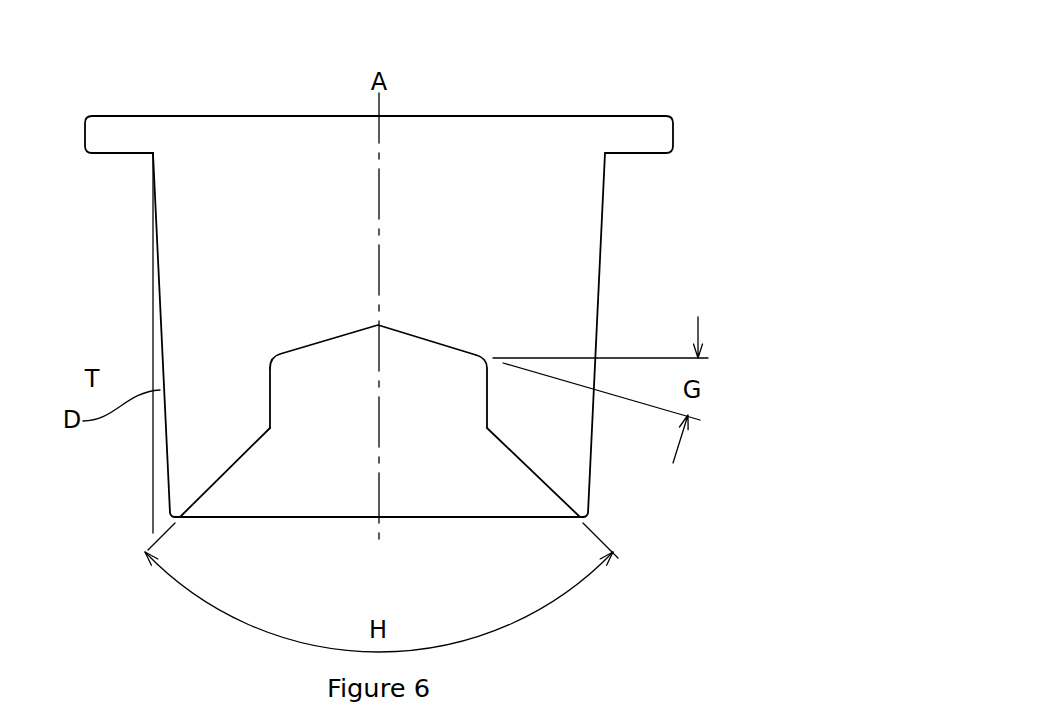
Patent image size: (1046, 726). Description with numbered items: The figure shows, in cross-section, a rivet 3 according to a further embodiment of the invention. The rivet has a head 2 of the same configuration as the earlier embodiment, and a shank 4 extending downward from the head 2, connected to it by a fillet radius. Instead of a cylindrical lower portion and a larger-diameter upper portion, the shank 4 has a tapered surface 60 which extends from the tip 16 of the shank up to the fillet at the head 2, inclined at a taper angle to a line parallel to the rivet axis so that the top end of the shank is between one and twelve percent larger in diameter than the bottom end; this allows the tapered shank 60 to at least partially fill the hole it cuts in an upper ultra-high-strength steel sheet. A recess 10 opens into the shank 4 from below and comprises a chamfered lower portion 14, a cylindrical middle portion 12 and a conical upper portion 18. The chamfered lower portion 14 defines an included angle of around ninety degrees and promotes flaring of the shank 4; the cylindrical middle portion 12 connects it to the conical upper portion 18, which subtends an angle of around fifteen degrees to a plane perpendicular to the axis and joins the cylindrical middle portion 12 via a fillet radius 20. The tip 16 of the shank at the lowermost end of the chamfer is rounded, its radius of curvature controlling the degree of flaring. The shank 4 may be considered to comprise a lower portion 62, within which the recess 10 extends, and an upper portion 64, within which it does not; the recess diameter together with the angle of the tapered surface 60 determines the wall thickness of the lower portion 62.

The head 2 is at (637, 137).
The rivet 3 is at (318, 217).
The shank 4 is at (257, 272).
The recess 10 is at (438, 445).
The cylindrical middle portion 12 is at (270, 407).
The chamfered lower portion 14 is at (237, 462).
The tip 16 is at (587, 520).
The conical upper portion 18 is at (338, 340).
The fillet radius 20 is at (480, 360).
The tapered surface 60 is at (160, 337).
The lower portion 62 is at (203, 442).
The upper portion 64 is at (250, 230).